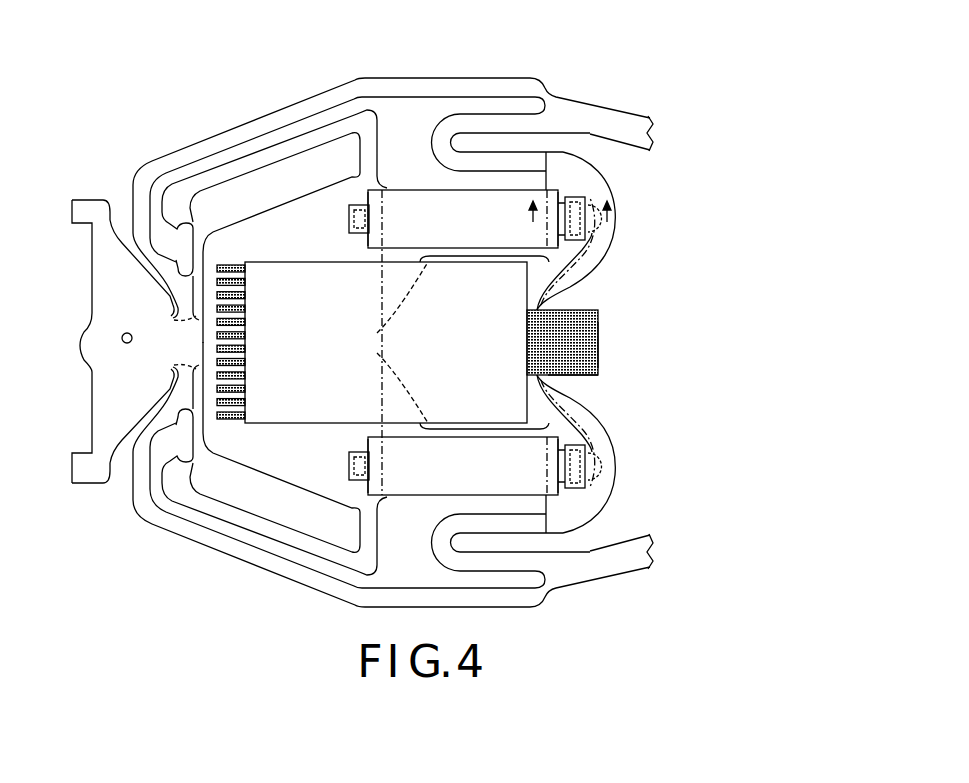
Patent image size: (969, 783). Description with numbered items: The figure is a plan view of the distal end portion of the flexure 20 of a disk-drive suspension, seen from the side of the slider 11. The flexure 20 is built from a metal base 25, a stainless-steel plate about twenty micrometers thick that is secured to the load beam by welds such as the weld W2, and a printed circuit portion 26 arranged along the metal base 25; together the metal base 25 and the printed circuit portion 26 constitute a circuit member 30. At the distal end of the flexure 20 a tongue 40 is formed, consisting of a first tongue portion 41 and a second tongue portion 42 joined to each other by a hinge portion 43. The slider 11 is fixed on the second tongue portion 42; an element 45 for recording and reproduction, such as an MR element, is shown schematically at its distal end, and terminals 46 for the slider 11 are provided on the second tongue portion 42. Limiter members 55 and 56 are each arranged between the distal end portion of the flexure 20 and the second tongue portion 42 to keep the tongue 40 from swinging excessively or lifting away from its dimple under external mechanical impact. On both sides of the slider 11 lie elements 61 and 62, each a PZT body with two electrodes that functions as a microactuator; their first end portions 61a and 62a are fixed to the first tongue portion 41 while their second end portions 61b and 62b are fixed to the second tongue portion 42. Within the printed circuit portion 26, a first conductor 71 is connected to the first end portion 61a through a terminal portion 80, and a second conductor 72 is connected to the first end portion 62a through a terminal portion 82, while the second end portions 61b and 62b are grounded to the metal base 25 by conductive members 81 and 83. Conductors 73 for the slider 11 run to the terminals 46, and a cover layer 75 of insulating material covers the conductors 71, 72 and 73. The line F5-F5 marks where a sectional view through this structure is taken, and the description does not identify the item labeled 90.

The flexure 20 is at (393, 310).
The metal base 25 is at (509, 167).
The tongue 40 is at (267, 340).
The second tongue portion 42 is at (247, 453).
The limiter member 55 is at (255, 158).
The limiter member 56 is at (260, 523).
The slider 11 is at (308, 308).
The element for recording/reproduction 45 is at (248, 336).
The terminals 46 is at (214, 325).
The hinge portion 43 is at (382, 337).
The first tongue portion 41 is at (458, 400).
The element 61 is at (460, 160).
The first end portion 61a is at (580, 195).
The second end portion 61b is at (358, 188).
The element 62 is at (454, 529).
The first end portion 62a is at (580, 490).
The second end portion 62b is at (358, 496).
The conductive member 81 is at (348, 219).
The conductive member 83 is at (348, 468).
The terminal portion 80 is at (591, 196).
The terminal portion 82 is at (591, 491).
The pressing direction line 90 is at (583, 178).
The first conductor 71 is at (597, 267).
The second conductor 72 is at (580, 425).
The cover layer 75 is at (617, 242).
The circuit member 30 is at (590, 298).
The conductors 73 is at (600, 368).
The printed circuit portion 26 is at (577, 387).
The weld W2 is at (120, 345).
The section line F5 is at (575, 212).